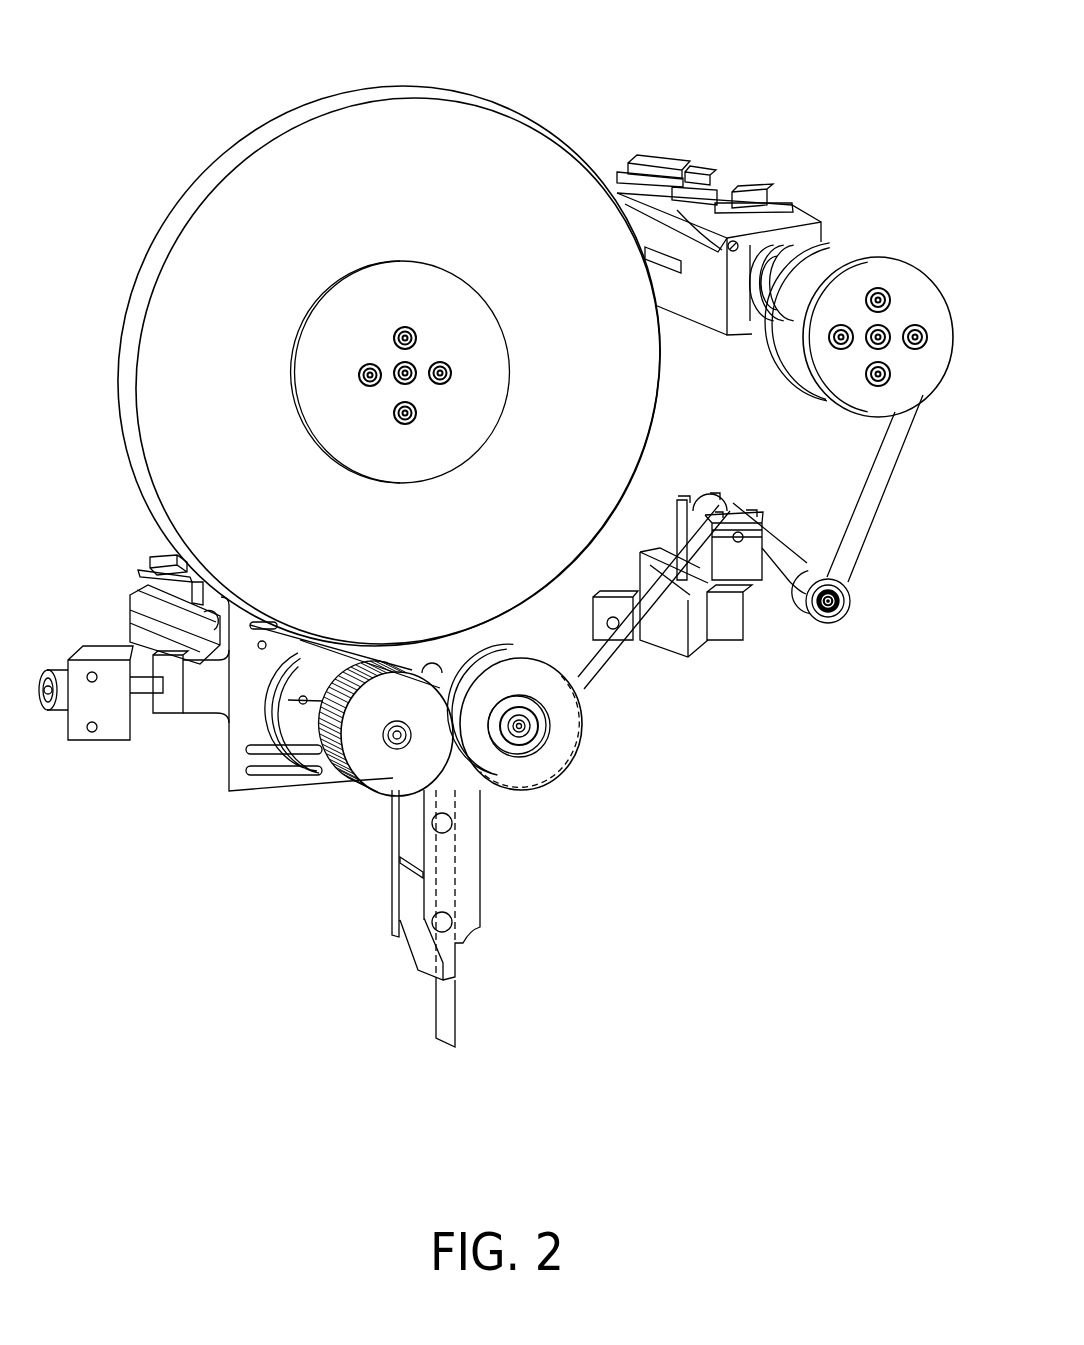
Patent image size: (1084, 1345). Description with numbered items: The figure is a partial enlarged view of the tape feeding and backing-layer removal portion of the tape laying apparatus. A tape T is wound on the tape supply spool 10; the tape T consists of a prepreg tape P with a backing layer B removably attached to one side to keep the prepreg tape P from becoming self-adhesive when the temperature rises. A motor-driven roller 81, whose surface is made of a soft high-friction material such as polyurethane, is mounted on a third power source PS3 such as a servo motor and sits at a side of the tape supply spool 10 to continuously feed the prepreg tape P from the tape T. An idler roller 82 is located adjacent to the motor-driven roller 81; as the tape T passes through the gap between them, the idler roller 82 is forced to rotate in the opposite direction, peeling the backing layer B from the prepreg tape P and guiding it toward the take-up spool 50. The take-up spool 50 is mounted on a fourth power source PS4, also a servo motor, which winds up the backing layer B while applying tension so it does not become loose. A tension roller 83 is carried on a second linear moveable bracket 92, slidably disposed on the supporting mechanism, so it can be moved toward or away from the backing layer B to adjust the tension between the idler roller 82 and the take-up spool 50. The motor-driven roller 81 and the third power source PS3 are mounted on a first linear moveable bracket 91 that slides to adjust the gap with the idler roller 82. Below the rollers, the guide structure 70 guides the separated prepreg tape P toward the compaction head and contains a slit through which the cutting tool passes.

The tape T is at (372, 93).
The tape supply spool 10 is at (412, 300).
The fourth power source PS4 is at (782, 222).
The take-up spool 50 is at (900, 283).
The backing layer B is at (860, 518).
The tension roller 83 is at (735, 510).
The second linear moveable bracket 92 is at (723, 622).
The third power source PS3 is at (143, 612).
The first linear moveable bracket 91 is at (205, 740).
The prepreg tape P is at (345, 665).
The motor-driven roller 81 is at (375, 770).
The idler roller 82 is at (560, 767).
The guide structure 70 is at (383, 865).